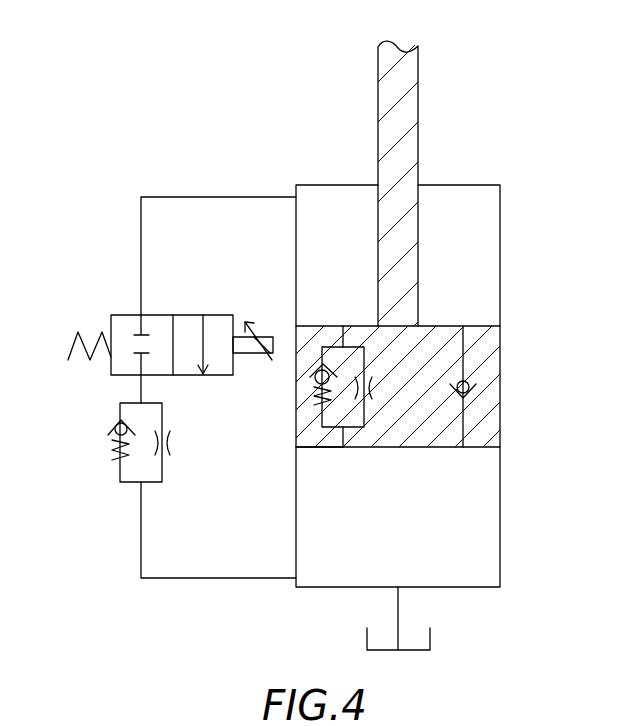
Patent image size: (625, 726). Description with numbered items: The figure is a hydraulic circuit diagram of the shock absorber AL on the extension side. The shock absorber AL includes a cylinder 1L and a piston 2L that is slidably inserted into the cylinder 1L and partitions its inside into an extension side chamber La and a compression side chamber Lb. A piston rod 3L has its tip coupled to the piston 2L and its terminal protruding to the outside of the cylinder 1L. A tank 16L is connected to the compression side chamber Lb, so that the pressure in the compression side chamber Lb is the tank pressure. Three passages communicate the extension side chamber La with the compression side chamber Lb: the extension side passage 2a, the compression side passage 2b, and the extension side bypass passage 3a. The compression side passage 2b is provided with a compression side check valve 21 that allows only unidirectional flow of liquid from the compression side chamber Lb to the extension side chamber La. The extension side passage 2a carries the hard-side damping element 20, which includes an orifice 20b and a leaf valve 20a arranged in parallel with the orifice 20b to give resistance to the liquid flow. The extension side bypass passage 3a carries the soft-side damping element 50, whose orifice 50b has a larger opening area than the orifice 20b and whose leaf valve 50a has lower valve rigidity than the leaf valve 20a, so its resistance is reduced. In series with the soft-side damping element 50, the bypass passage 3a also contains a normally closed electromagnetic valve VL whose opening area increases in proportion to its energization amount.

The shock absorber on the extension side AL is at (128, 130).
The cylinder 1L is at (500, 490).
The extension side chamber La is at (474, 283).
The compression side chamber Lb is at (474, 545).
The piston rod 3L is at (408, 128).
The extension side bypass passage 3a is at (138, 265).
The piston 2L is at (363, 448).
The extension side passage 2a is at (296, 440).
The compression side passage 2b is at (463, 350).
The compression side check valve 21 is at (470, 386).
The hard-side damping element on the extension side 20 is at (320, 338).
The leaf valve 20a is at (317, 385).
The orifice 20b is at (373, 383).
The electromagnetic valve VL is at (118, 376).
The soft-side damping element on the extension side 50 is at (113, 473).
The leaf valve 50a is at (112, 437).
The orifice 50b is at (168, 440).
The tank 16L is at (432, 633).